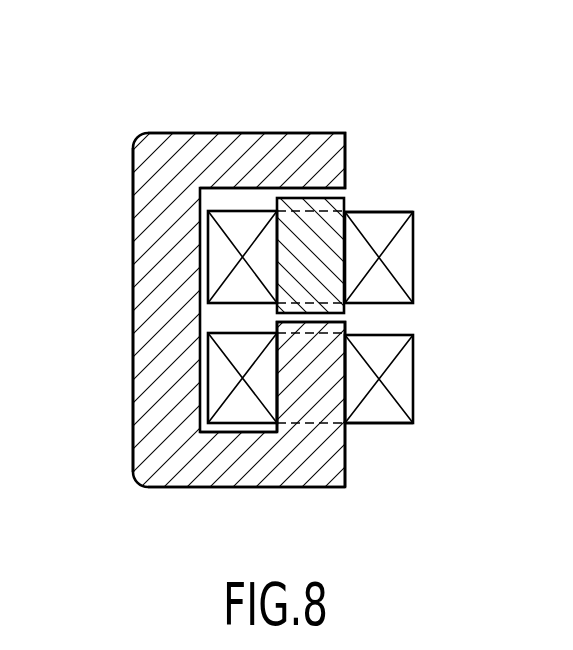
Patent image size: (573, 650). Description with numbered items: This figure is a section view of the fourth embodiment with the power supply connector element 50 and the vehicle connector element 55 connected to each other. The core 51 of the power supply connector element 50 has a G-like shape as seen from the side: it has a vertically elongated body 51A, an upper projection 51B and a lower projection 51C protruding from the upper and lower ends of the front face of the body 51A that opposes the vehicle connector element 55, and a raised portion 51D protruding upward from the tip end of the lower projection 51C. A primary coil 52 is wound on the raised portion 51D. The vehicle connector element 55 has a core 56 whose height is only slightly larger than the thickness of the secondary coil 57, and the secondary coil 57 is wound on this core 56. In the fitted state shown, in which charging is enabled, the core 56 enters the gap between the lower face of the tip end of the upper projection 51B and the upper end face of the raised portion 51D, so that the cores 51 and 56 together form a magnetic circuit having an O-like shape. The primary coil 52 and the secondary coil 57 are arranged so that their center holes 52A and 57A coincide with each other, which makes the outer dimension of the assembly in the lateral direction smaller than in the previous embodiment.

The power supply connector element 50 is at (226, 106).
The core 51 is at (140, 135).
The body 51A is at (153, 313).
The upper projection 51B is at (292, 140).
The lower projection 51C is at (224, 483).
The raised portion 51D is at (333, 352).
The primary coil 52 is at (397, 387).
The center hole 52A is at (343, 395).
The vehicle connector element 55 is at (428, 170).
The core 56 is at (313, 232).
The secondary coil 57 is at (403, 269).
The center hole 57A is at (347, 259).